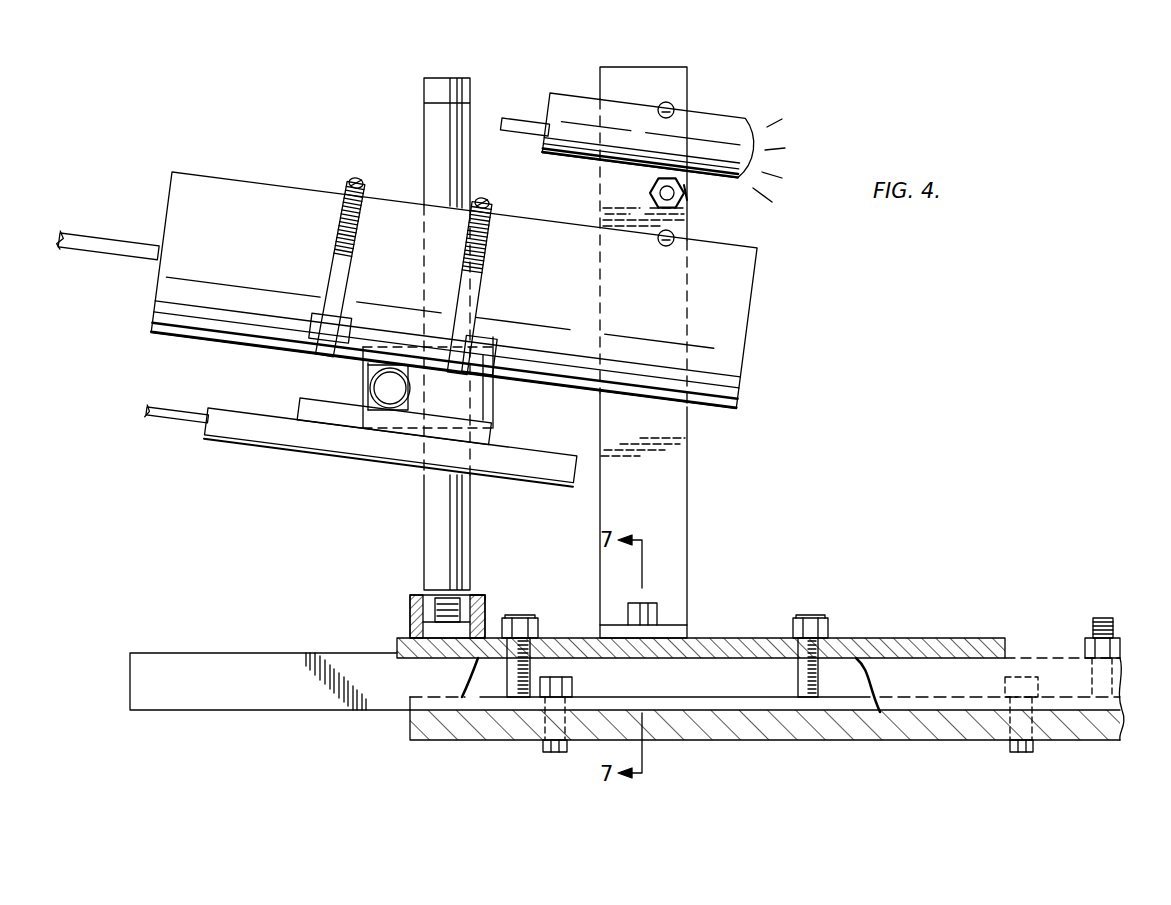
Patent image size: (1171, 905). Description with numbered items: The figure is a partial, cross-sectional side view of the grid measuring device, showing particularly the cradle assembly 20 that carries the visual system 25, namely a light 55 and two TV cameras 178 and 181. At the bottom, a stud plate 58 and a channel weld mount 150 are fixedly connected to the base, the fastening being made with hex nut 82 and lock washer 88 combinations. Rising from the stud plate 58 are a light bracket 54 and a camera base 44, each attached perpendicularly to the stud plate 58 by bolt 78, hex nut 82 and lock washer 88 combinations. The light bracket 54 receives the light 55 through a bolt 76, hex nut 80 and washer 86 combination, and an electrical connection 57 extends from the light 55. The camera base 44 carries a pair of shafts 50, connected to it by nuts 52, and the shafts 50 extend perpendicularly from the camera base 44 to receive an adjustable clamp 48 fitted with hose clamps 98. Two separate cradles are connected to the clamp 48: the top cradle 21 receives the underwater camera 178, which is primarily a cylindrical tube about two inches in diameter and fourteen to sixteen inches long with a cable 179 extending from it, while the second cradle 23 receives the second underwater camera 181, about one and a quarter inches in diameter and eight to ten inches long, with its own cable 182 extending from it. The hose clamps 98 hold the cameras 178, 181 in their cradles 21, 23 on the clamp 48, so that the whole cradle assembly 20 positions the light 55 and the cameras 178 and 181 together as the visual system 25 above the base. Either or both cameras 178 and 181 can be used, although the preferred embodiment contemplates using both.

The cradle assembly 20 is at (390, 494).
The top cradle 21 is at (317, 344).
The second cradle 23 is at (488, 433).
The visual system 25 is at (495, 279).
The camera base 44 is at (980, 642).
The adjustable clamp 48 is at (482, 402).
The shafts 50 is at (440, 87).
The nuts 52 is at (413, 610).
The light bracket 54 is at (672, 426).
The light 55 is at (562, 95).
The electrical connection 57 is at (523, 120).
The stud plate 58 is at (785, 703).
The bolt 76 is at (652, 190).
The bolt 78 is at (817, 590).
The hex nut 80 is at (685, 215).
The hex nut 82 is at (530, 628).
The washer 86 is at (684, 186).
The lock washer 88 is at (473, 594).
The hose clamps 98 is at (360, 182).
The channel weld mounts 150 is at (223, 664).
The underwater camera 178 is at (227, 193).
The cable 179 is at (100, 238).
The second underwater camera 181 is at (262, 437).
The cable 182 is at (167, 413).